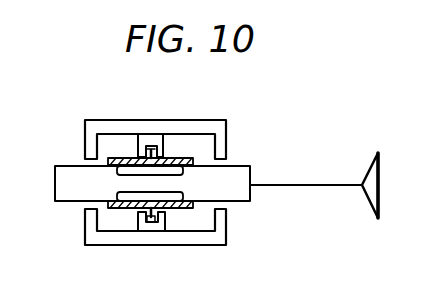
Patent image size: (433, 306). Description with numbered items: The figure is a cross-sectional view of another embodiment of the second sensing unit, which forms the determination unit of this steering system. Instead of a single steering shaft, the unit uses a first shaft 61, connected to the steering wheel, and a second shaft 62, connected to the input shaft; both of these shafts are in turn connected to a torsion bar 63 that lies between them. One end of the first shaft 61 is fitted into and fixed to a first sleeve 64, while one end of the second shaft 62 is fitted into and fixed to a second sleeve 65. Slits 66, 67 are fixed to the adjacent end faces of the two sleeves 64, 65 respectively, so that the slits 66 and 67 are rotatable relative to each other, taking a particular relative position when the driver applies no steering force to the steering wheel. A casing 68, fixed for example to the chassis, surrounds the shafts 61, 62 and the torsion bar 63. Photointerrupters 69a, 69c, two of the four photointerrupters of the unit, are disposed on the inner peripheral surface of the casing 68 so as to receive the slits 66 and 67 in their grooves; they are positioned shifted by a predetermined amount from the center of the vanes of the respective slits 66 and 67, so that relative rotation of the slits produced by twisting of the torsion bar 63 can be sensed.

The first shaft 61 is at (232, 178).
The second shaft 62 is at (68, 172).
The torsion bar 63 is at (162, 184).
The first sleeve 64 is at (178, 160).
The second sleeve 65 is at (108, 160).
The slit 66 is at (145, 227).
The slit 67 is at (158, 227).
The casing 68 is at (153, 126).
The photointerrupter 69a is at (142, 143).
The photointerrupter 69c is at (150, 228).